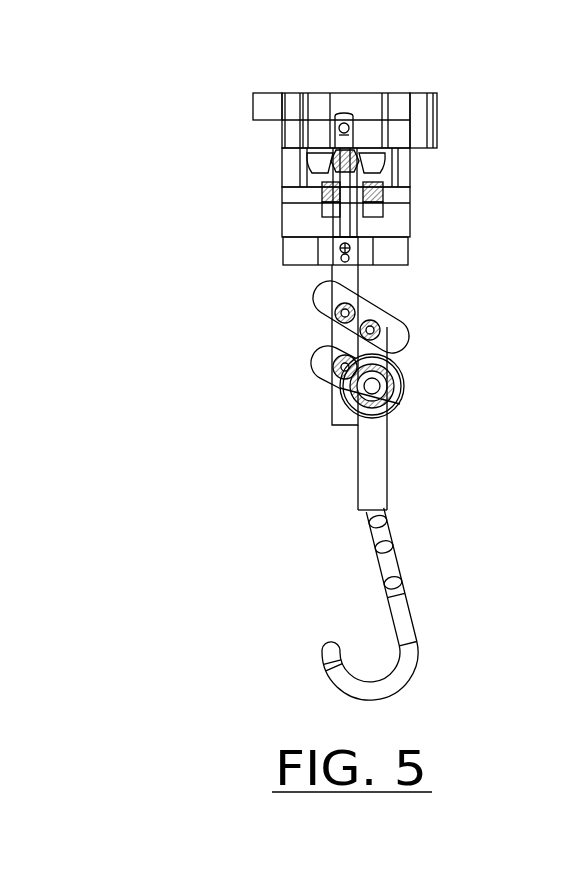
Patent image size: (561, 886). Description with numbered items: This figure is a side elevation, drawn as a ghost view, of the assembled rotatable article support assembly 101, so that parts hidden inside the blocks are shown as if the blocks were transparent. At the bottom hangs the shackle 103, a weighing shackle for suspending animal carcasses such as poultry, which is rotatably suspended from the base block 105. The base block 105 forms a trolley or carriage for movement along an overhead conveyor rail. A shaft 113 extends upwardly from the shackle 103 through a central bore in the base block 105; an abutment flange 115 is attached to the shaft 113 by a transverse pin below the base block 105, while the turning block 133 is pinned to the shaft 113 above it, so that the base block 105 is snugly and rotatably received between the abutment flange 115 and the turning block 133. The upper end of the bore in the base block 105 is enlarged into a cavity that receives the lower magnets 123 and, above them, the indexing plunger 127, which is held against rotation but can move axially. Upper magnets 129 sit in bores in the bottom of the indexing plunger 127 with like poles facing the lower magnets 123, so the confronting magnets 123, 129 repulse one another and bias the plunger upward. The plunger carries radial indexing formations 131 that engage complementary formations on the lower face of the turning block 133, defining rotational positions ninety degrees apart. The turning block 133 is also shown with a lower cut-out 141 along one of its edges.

The article support assembly 101 is at (355, 360).
The shackle 103 is at (365, 463).
The base block 105 is at (392, 221).
The shaft 113 is at (345, 277).
The abutment flange 115 is at (388, 252).
The lower magnet 123 is at (282, 223).
The indexing plunger 127 is at (282, 186).
The upper magnet 129 is at (428, 183).
The indexing formation 131 is at (385, 135).
The turning block 133 is at (313, 108).
The lower cut-out 141 is at (282, 132).